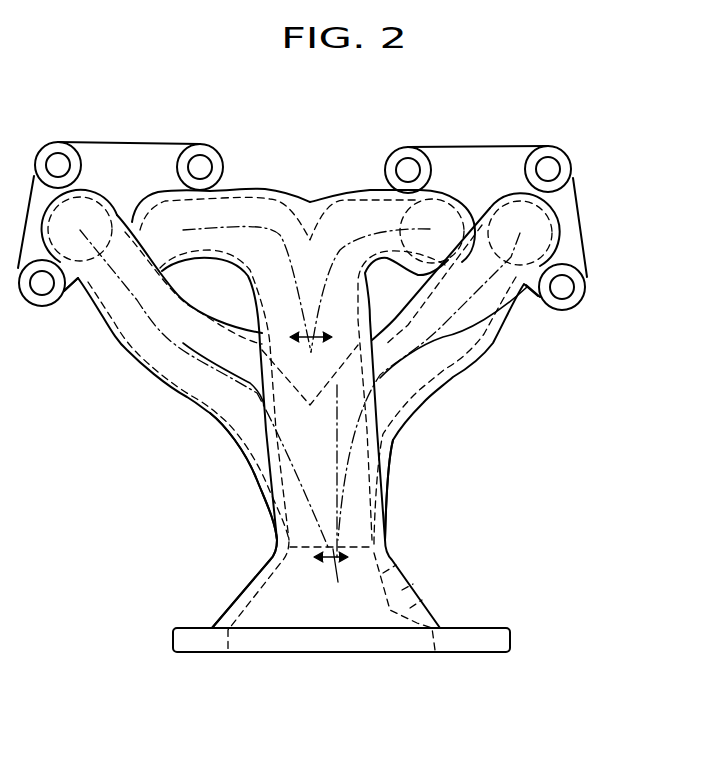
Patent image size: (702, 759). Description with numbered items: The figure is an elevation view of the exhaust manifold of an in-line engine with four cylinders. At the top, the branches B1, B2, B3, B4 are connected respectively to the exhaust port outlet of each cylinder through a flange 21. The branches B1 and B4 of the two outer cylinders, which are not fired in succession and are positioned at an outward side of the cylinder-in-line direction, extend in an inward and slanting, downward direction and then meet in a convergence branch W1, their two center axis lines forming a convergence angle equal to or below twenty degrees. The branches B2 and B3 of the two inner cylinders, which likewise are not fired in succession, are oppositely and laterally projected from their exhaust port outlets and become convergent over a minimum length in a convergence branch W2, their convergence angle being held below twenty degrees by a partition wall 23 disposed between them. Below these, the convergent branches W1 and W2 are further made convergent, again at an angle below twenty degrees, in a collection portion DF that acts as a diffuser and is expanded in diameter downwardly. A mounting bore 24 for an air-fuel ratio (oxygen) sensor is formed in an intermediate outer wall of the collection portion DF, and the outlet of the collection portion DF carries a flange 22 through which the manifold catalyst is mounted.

The flange 21 is at (162, 143).
The flange 22 is at (172, 637).
The partition wall 23 is at (322, 237).
The mounting bore 24 is at (405, 589).
The branch B1 is at (182, 400).
The branch B2 is at (247, 270).
The branch B3 is at (366, 266).
The branch B4 is at (438, 390).
The convergence branch W1 is at (262, 492).
The convergence branch W2 is at (397, 445).
The collection portion DF is at (240, 599).